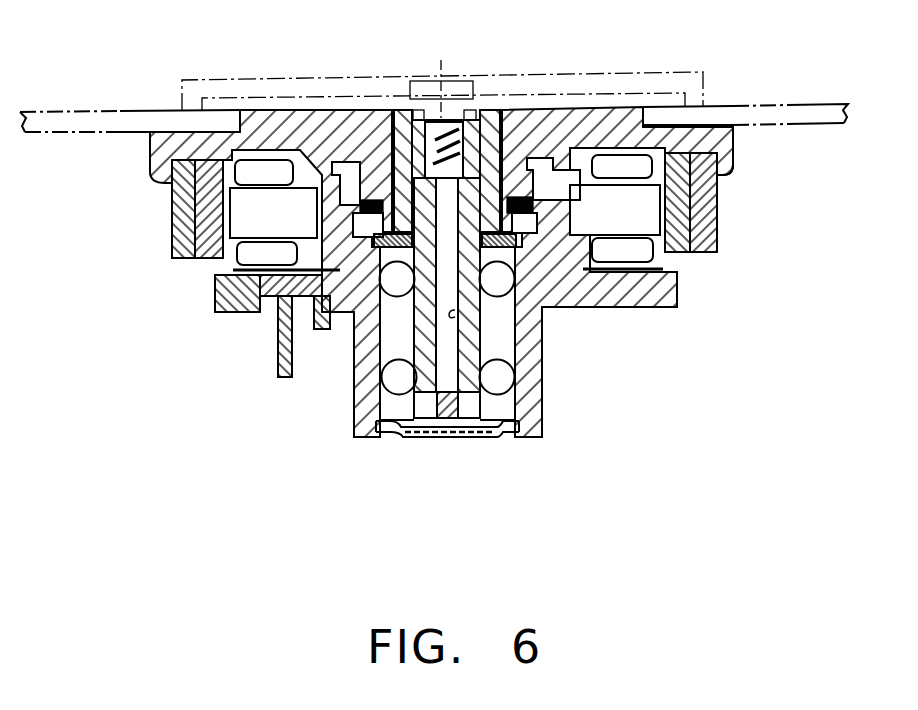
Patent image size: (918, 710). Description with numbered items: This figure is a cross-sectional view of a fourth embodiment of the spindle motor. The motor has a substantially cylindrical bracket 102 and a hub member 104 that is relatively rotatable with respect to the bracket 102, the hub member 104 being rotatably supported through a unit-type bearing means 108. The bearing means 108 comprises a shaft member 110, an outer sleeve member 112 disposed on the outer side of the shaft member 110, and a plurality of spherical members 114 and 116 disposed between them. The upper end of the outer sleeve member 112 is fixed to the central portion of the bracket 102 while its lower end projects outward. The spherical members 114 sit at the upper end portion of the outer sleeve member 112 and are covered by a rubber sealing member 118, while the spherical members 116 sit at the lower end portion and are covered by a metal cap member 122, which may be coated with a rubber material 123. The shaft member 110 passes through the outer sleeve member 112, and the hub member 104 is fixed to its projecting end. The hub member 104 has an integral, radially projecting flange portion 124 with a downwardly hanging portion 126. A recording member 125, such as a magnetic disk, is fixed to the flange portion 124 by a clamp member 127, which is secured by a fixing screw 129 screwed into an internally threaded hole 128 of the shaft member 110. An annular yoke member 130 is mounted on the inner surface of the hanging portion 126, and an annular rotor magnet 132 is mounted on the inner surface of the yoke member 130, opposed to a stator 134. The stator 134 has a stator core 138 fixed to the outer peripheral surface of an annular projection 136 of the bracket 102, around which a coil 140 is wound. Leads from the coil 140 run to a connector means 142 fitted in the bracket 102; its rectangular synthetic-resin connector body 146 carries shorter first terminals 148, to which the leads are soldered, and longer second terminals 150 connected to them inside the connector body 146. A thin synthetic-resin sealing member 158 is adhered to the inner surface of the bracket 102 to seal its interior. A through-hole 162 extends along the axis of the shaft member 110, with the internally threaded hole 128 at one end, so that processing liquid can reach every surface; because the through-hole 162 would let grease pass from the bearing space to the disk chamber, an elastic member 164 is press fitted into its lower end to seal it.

The bracket 102 is at (624, 318).
The hub member 104 is at (307, 104).
The bearing means 108 is at (347, 404).
The shaft member 110 is at (466, 128).
The outer sleeve member 112 is at (455, 315).
The spherical members 114 is at (507, 283).
The spherical members 116 is at (498, 384).
The sealing member 118 is at (394, 124).
The cap member 122 is at (403, 444).
The rubber material 123 is at (463, 440).
The flange portion 124 is at (691, 126).
The recording member 125 is at (789, 104).
The hanging portion 126 is at (727, 154).
The clamp member 127 is at (621, 73).
The internally threaded hole 128 is at (450, 124).
The fixing screw 129 is at (441, 100).
The yoke member 130 is at (710, 202).
The rotor magnet 132 is at (687, 252).
The stator 134 is at (247, 172).
The annular projection 136 is at (338, 111).
The stator core 138 is at (242, 215).
The coil 140 is at (258, 155).
The connector means 142 is at (255, 320).
The connector body 146 is at (262, 292).
The first terminals 148 is at (326, 331).
The second terminals 150 is at (281, 364).
The sealing member 158 is at (653, 307).
The through-hole 162 is at (527, 371).
The elastic member 164 is at (437, 424).